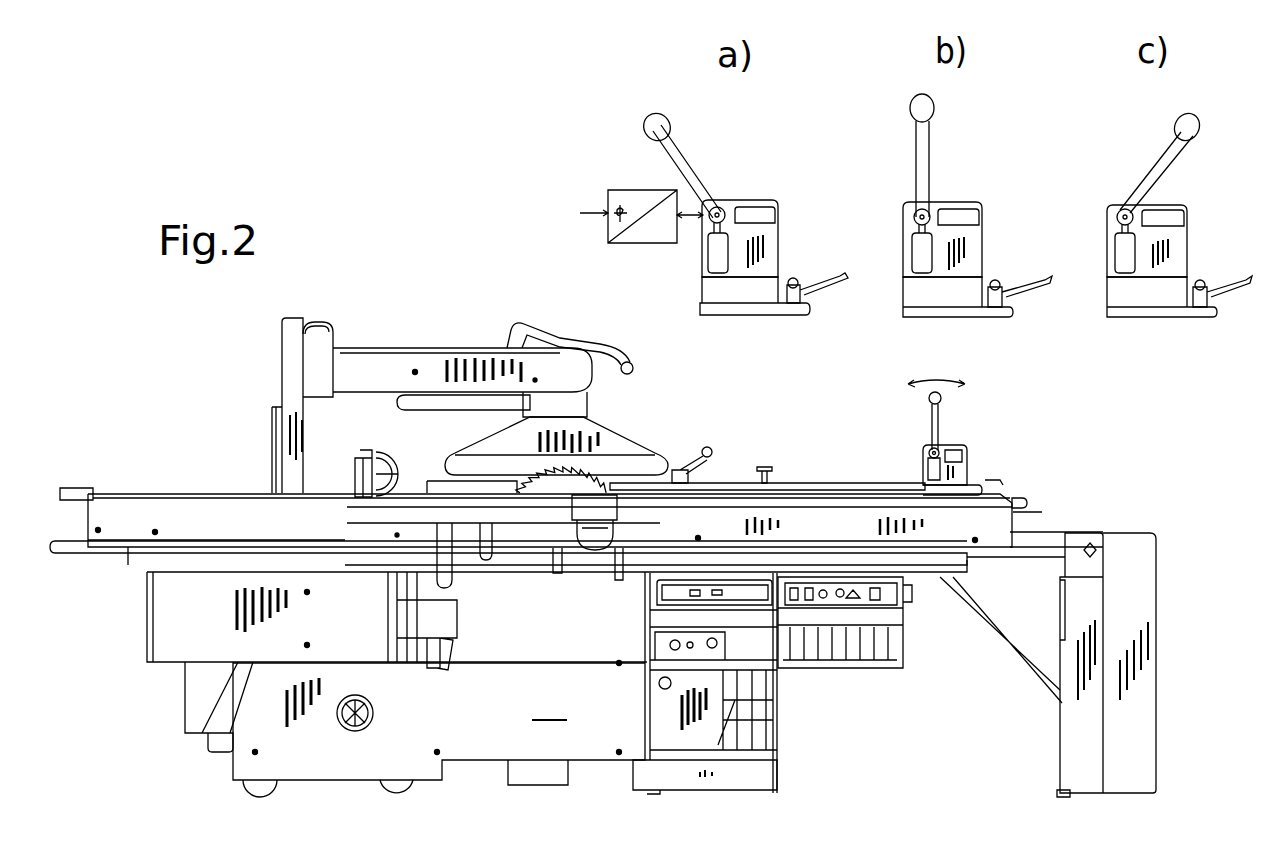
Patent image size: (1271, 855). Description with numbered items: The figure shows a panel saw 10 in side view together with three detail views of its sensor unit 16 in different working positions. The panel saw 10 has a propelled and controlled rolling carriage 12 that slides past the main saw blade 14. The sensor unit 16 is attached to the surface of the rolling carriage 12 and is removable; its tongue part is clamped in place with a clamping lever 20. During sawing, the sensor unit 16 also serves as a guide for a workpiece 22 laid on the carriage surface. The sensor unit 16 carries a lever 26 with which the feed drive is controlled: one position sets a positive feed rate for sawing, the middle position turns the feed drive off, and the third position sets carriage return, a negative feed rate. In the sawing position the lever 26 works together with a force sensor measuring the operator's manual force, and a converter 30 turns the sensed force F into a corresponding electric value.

In FIG. 2, the panel saw 10 is at (193, 395).
In FIG. 2, the rolling carriage 12 is at (967, 517).
In FIG. 2, the main saw blade 14 is at (595, 472).
In FIG. 2, the sensor unit 16 is at (954, 464).
In FIG. 2a, the sensor unit 16 is at (768, 247).
In FIG. 2b, the sensor unit 16 is at (972, 256).
In FIG. 2c, the sensor unit 16 is at (1175, 259).
In FIG. 2, the clamping lever 20 is at (995, 480).
In FIG. 2, the workpiece 22 is at (846, 484).
In FIG. 2, the lever 26 is at (942, 423).
In FIG. 2a, the lever 26 is at (702, 186).
In FIG. 2b, the lever 26 is at (931, 163).
In FIG. 2c, the lever 26 is at (1158, 177).
In FIG. 2a, the converter 30 is at (622, 243).